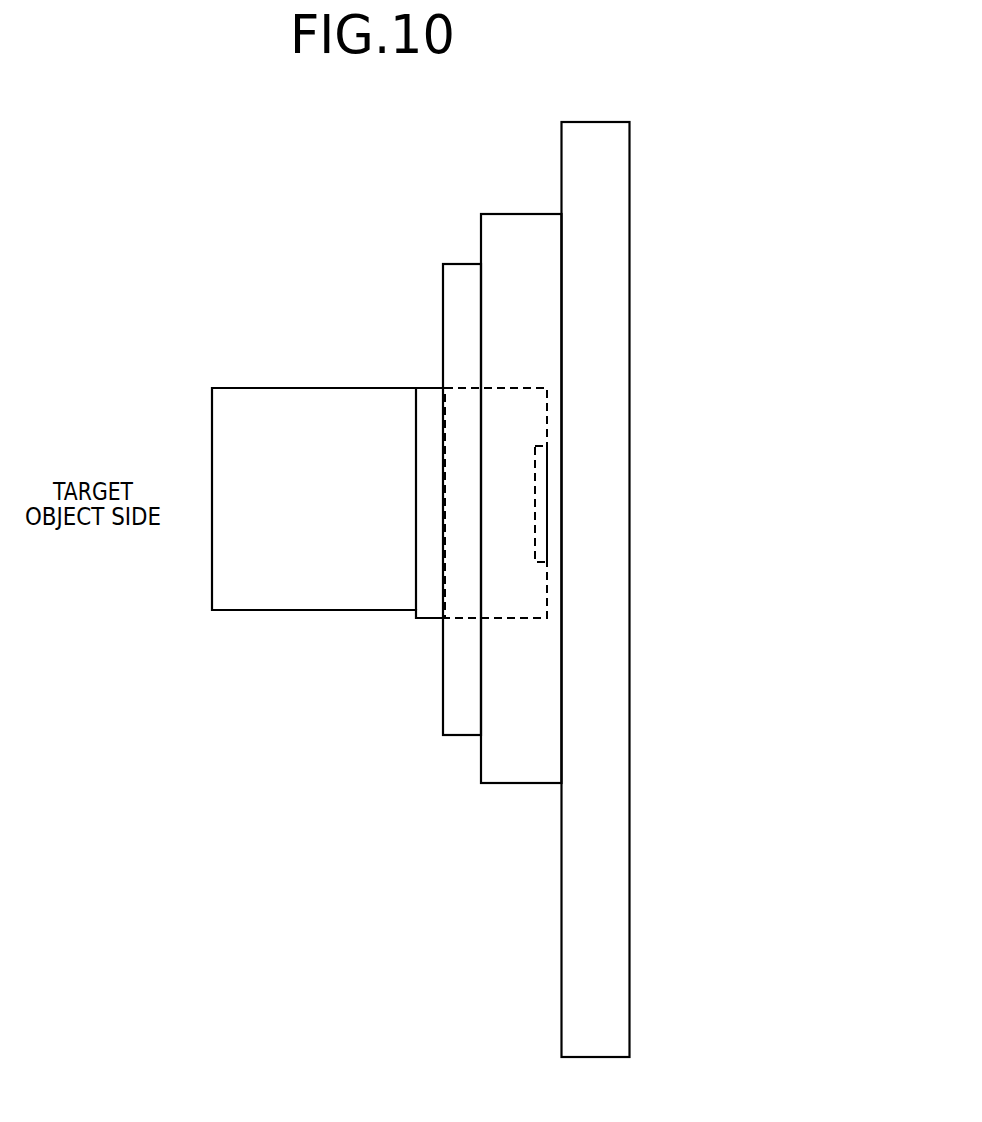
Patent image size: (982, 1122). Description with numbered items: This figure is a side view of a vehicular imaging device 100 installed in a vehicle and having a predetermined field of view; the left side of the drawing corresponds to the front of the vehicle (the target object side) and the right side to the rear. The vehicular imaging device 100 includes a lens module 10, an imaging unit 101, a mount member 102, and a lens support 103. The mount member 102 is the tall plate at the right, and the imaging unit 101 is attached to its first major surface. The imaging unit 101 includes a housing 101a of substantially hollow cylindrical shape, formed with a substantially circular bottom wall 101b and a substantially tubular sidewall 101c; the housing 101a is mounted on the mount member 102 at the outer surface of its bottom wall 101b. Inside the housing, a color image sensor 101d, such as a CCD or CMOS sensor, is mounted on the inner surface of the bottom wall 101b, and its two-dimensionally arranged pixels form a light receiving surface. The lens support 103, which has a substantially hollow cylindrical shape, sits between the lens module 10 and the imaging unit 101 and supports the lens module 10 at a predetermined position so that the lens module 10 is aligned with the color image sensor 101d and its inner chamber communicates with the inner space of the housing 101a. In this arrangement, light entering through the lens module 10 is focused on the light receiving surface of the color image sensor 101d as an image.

The lens module 10 is at (390, 388).
The vehicular imaging device 100 is at (559, 564).
The imaging unit 101 is at (508, 225).
The housing 101a is at (490, 212).
The bottom wall 101b is at (548, 502).
The sidewall 101c is at (532, 783).
The color image sensor 101d is at (533, 538).
The mount member 102 is at (587, 131).
The lens support 103 is at (457, 735).